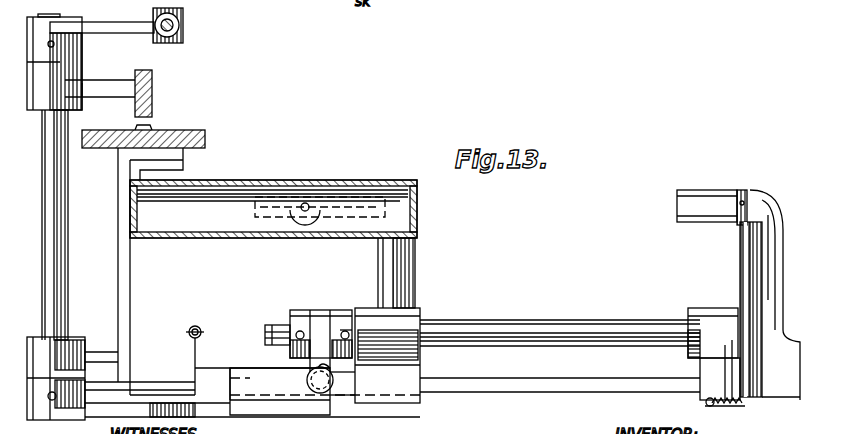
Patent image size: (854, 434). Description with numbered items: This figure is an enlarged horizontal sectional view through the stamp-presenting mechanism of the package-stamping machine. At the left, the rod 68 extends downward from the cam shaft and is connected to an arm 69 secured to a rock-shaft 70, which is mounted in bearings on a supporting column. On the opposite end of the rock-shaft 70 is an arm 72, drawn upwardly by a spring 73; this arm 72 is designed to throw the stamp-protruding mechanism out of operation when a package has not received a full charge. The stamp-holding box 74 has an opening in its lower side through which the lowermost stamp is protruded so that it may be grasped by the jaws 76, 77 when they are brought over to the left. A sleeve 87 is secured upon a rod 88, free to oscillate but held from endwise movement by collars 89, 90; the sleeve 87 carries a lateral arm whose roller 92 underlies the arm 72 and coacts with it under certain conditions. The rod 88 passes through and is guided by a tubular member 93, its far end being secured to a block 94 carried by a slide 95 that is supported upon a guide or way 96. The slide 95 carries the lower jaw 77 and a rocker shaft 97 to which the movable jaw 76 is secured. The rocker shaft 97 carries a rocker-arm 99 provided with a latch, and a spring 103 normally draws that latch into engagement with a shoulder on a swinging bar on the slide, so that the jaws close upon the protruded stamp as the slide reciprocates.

The rod 68 is at (183, 20).
The arm 69 is at (115, 22).
The rock-shaft 70 is at (55, 210).
The arm 72 is at (268, 418).
The spring 73 is at (202, 333).
The stamp-holding box 74 is at (243, 178).
The movable jaw 76 is at (690, 204).
The jaw 77 is at (686, 224).
The sleeve 87 is at (318, 312).
The rod 88 is at (614, 320).
The collar 89 is at (348, 312).
The collar 90 is at (280, 312).
The roller 92 is at (333, 370).
The tubular member 93 is at (428, 326).
The block 94 is at (710, 312).
The slide 95 is at (718, 372).
The guide or way 96 is at (582, 382).
The rocker shaft 97 is at (740, 256).
The rocker-arm 99 is at (752, 378).
The spring 103 is at (728, 410).